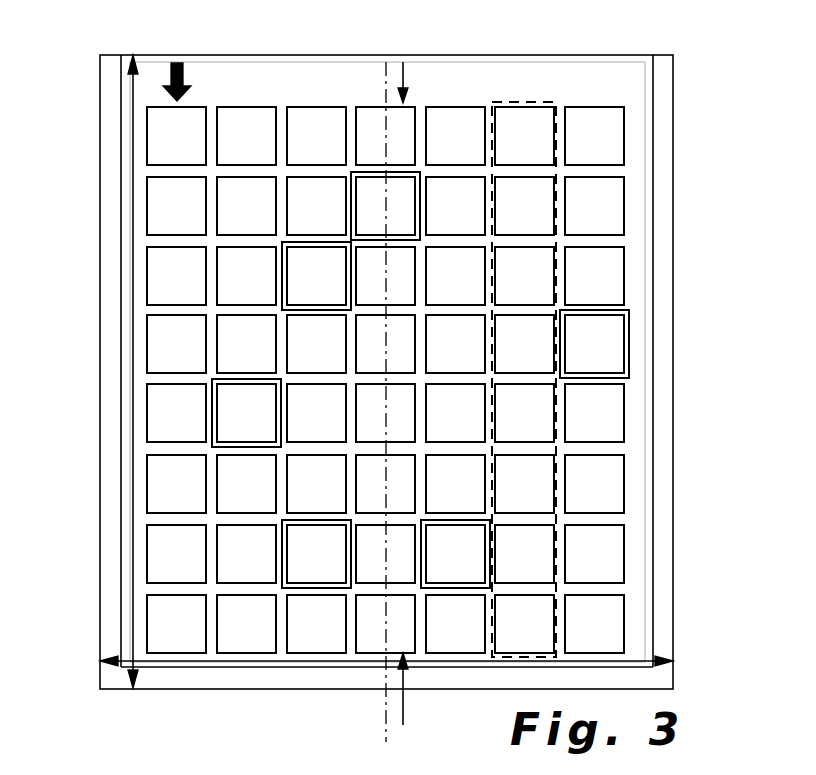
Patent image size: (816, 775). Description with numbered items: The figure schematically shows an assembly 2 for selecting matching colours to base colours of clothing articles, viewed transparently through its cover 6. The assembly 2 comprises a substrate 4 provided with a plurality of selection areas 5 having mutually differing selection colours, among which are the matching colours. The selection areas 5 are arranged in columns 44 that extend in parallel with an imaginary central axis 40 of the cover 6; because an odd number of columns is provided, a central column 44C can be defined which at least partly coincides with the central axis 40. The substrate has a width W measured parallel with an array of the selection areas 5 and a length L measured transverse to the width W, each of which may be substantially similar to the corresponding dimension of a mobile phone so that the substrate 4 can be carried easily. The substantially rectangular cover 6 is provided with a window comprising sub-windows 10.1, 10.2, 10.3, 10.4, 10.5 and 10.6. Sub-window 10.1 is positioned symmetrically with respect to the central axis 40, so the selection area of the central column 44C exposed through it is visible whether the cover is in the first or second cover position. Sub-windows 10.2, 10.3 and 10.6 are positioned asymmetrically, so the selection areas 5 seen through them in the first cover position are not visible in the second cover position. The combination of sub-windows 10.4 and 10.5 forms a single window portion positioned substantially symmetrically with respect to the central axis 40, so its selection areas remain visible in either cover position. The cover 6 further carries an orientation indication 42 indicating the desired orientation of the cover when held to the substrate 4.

The assembly 2 is at (692, 86).
The substrate 4 is at (665, 164).
The selection areas 5 is at (515, 145).
The cover 6 is at (597, 82).
The sub-window 10.1 is at (378, 180).
The sub-window 10.2 is at (283, 275).
The sub-window 10.3 is at (214, 417).
The sub-window 10.4 is at (283, 560).
The sub-window 10.5 is at (487, 548).
The sub-window 10.6 is at (624, 333).
The central axis 40 is at (380, 702).
The orientation indication 42 is at (176, 61).
The columns 44 is at (513, 100).
The central column 44C is at (424, 393).
The length L is at (132, 80).
The width W is at (249, 661).